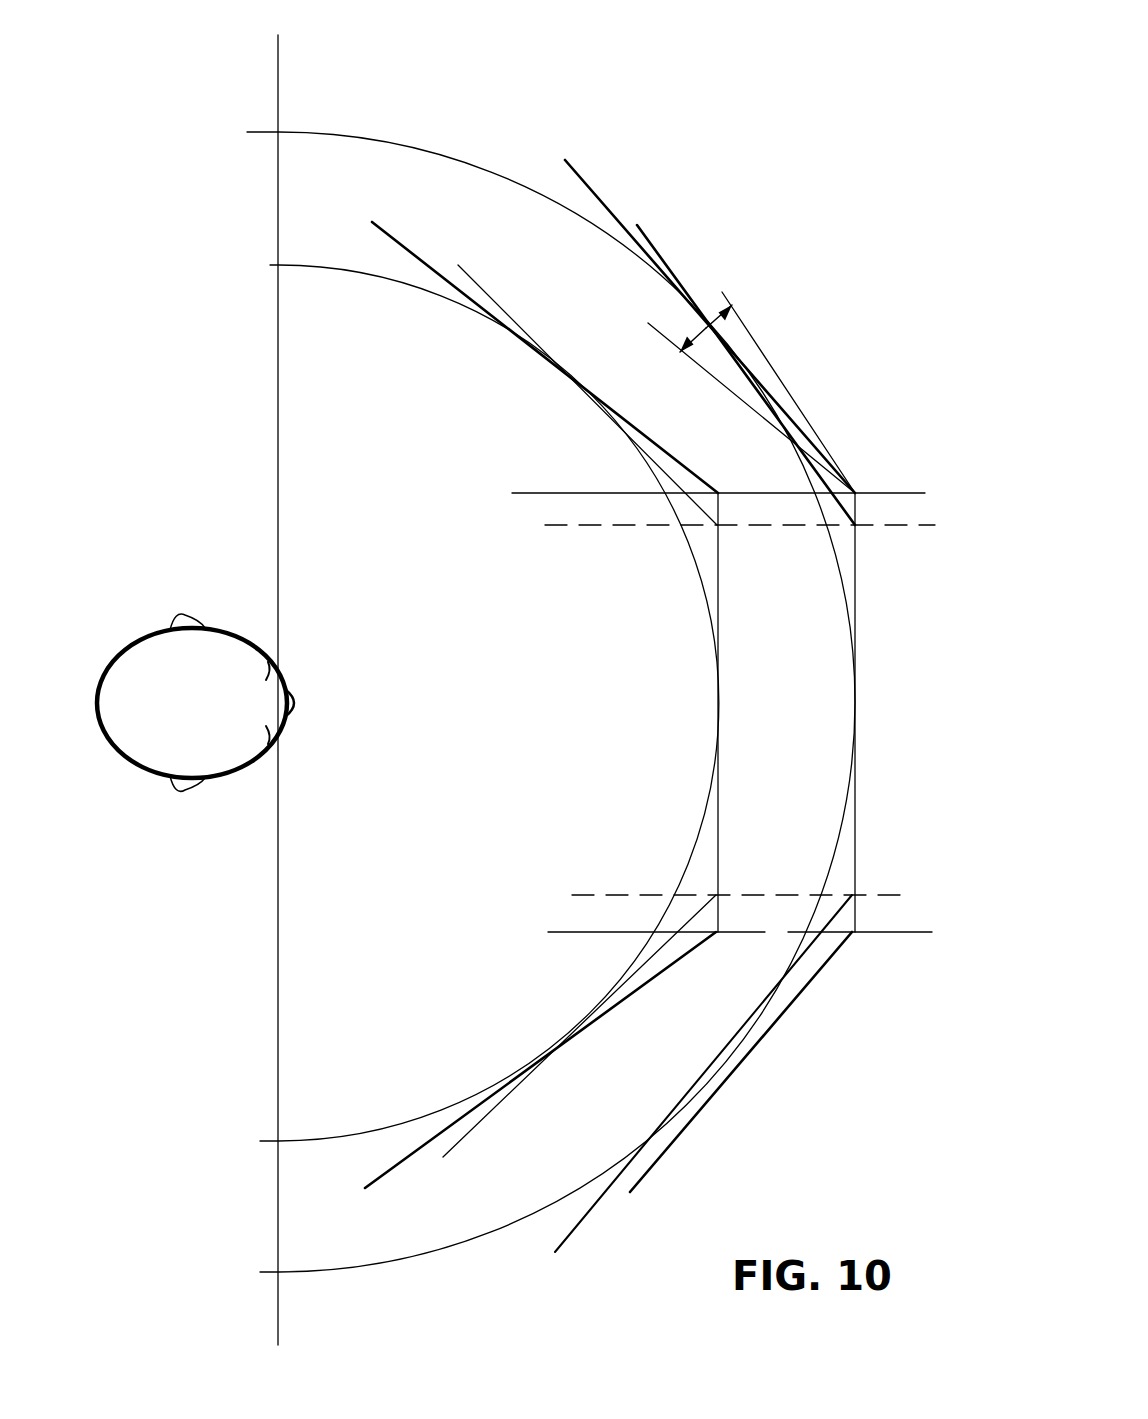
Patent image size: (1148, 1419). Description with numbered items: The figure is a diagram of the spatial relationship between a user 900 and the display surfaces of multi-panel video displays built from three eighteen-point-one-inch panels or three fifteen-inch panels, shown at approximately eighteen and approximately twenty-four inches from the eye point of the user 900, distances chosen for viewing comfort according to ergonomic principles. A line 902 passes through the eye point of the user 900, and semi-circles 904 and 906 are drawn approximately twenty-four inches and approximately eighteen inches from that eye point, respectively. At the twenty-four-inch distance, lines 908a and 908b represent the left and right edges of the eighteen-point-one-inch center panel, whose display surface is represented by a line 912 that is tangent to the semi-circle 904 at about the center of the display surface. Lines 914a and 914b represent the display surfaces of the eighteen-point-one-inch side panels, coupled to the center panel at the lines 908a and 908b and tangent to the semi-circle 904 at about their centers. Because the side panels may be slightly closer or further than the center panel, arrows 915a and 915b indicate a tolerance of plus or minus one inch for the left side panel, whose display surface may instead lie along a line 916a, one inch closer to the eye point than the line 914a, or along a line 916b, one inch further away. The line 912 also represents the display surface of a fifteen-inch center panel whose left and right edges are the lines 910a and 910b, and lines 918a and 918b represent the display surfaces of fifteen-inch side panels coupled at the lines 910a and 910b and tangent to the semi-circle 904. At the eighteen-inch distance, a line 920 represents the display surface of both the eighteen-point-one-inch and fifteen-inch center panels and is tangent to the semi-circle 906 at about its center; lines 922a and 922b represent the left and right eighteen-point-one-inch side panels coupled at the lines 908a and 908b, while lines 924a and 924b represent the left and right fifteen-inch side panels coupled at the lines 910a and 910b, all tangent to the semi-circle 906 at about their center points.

The user 900 is at (108, 652).
The line 902 is at (277, 87).
The semi-circle 904 is at (320, 132).
The semi-circle 906 is at (300, 262).
The line 908a is at (885, 493).
The line 908b is at (878, 932).
The line 910a is at (886, 520).
The line 910b is at (885, 892).
The line 912 is at (858, 612).
The line 914a is at (603, 200).
The line 914b is at (580, 1238).
The arrow 915a is at (681, 348).
The arrow 915b is at (722, 300).
The line 916a is at (738, 384).
The line 916b is at (770, 352).
The line 918a is at (652, 238).
The line 918b is at (664, 1152).
The line 920 is at (722, 596).
The line 922a is at (390, 232).
The line 922b is at (368, 1180).
The line 924a is at (488, 296).
The line 924b is at (478, 1118).